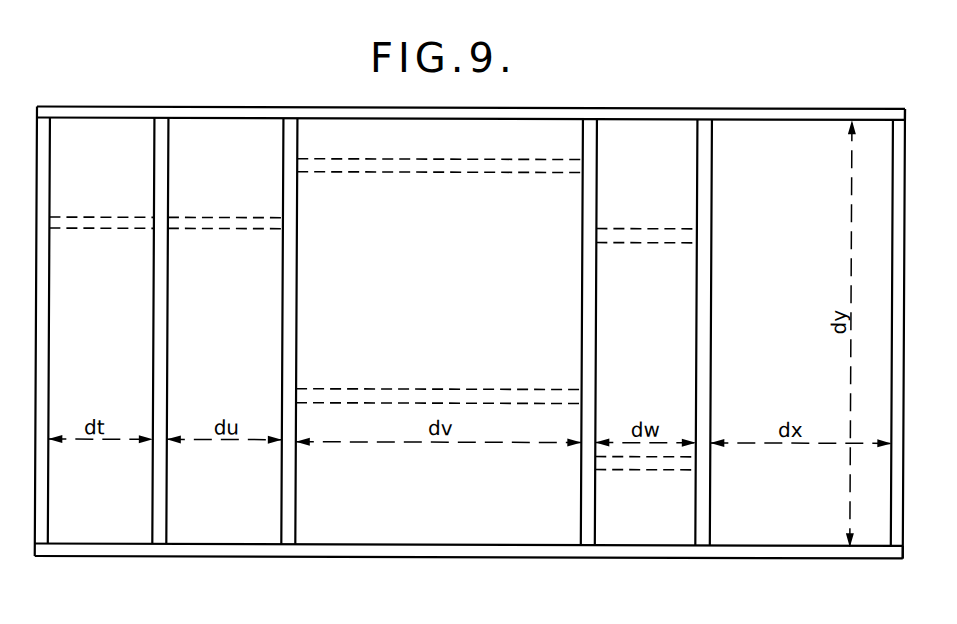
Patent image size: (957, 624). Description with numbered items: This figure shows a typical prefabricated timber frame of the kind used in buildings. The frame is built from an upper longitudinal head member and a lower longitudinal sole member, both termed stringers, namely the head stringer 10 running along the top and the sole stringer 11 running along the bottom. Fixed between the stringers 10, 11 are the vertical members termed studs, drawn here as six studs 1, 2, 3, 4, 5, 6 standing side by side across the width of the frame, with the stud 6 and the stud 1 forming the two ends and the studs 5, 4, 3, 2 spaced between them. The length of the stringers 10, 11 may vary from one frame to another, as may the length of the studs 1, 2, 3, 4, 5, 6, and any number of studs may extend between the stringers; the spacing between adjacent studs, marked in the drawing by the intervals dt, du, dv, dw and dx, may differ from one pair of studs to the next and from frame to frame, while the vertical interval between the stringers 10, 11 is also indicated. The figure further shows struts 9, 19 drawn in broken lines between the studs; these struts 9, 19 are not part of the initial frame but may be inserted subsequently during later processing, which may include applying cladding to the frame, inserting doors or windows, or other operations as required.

The stud 1 is at (903, 317).
The stud 2 is at (706, 318).
The stud 3 is at (595, 318).
The stud 4 is at (291, 309).
The stud 5 is at (163, 309).
The stud 6 is at (44, 310).
The strut 9 is at (207, 223).
The head stringer 10 is at (772, 109).
The sole stringer 11 is at (774, 554).
The strut 19 is at (456, 163).